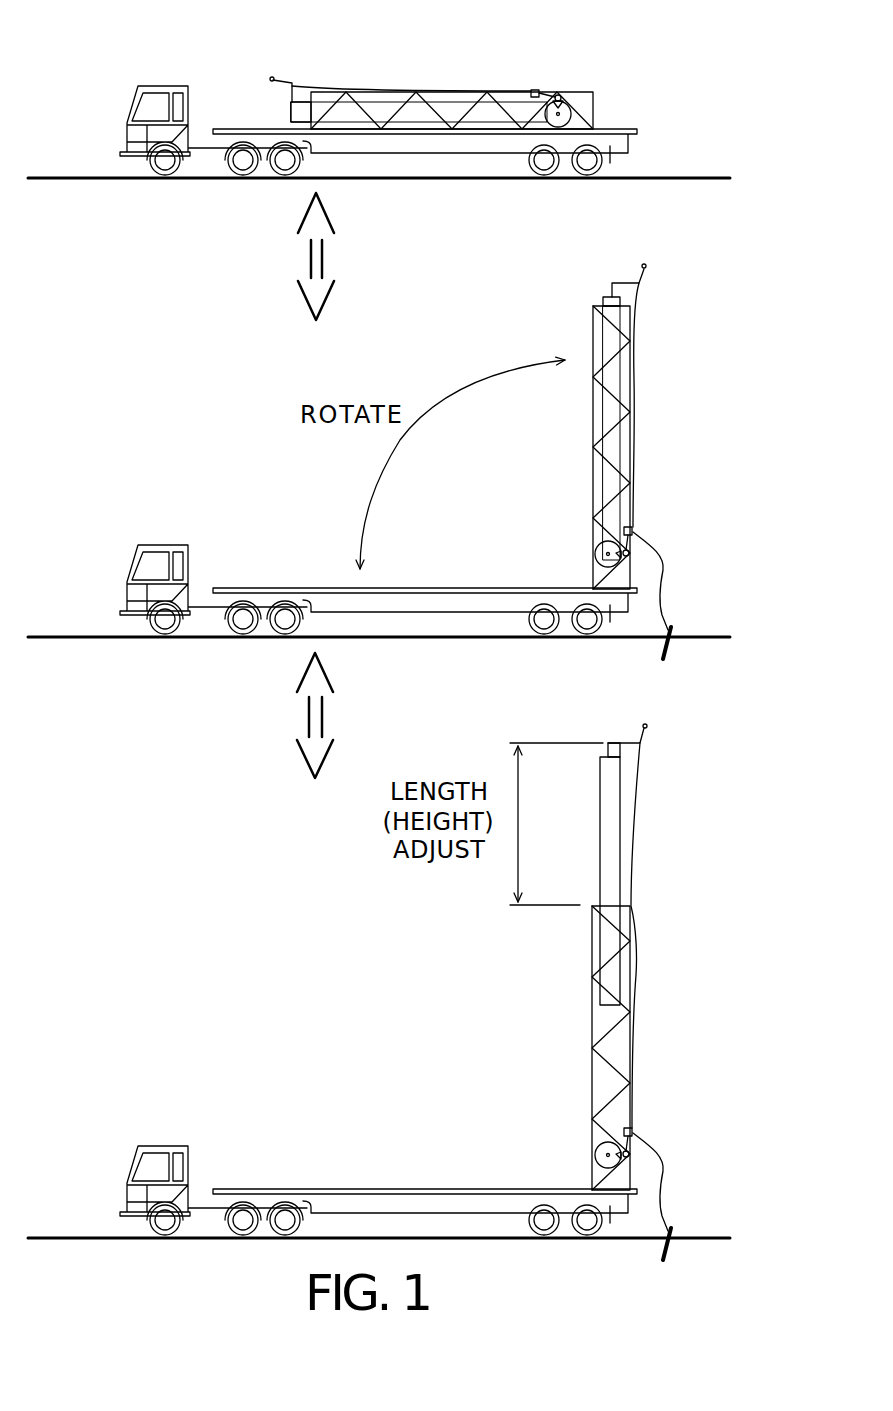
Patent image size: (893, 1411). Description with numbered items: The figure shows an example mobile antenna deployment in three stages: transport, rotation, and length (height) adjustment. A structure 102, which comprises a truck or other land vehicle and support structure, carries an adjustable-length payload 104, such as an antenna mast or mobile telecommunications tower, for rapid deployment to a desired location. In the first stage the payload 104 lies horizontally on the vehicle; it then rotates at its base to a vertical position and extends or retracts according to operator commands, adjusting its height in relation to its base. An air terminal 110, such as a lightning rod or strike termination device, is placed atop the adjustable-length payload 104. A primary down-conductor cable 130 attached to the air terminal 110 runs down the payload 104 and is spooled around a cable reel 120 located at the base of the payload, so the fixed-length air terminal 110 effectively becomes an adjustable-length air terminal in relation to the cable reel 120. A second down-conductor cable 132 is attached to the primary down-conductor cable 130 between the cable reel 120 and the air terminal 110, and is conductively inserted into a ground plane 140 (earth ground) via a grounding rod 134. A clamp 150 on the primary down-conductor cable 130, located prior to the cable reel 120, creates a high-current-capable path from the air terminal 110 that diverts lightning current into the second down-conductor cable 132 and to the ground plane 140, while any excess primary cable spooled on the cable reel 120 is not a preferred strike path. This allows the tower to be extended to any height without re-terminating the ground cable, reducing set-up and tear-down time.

The structure 102 is at (598, 94).
The adjustable-length payload 104 is at (389, 113).
The air terminal 110 is at (270, 77).
The cable reel 120 is at (562, 92).
The primary down-conductor cable 130 is at (347, 90).
The second down-conductor cable 132 is at (669, 572).
The grounding rod 134 is at (669, 645).
The ground plane 140 is at (530, 222).
The clamp 150 is at (534, 88).